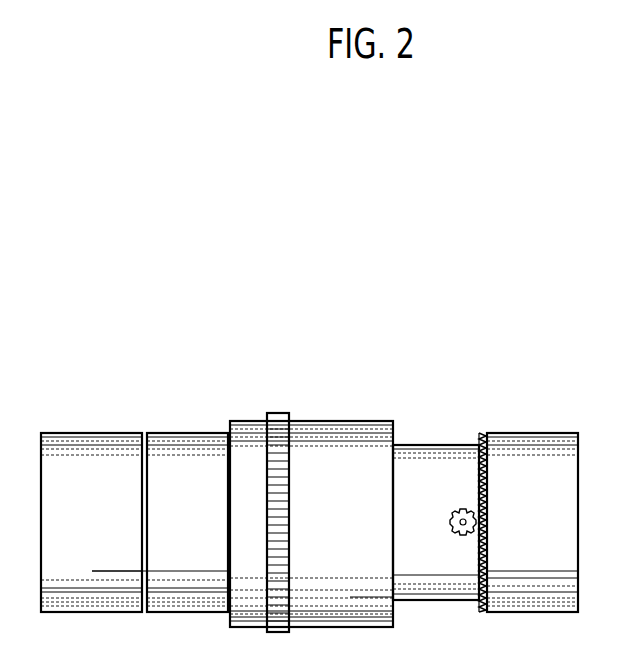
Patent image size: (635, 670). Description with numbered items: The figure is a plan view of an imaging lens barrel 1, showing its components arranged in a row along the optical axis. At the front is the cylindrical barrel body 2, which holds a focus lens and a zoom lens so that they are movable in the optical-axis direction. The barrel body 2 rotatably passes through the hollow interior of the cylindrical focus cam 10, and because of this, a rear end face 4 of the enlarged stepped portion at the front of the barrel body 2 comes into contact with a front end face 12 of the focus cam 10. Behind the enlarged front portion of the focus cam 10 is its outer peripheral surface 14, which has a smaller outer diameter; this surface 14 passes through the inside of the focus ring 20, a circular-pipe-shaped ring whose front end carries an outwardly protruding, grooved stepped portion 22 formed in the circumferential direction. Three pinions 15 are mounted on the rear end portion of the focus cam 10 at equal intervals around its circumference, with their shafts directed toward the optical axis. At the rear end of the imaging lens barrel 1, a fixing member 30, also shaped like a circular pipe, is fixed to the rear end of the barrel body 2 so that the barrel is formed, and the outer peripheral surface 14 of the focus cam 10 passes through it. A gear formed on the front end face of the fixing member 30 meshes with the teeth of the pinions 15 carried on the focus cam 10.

The imaging lens barrel 1 is at (102, 312).
The barrel body 2 is at (92, 437).
The rear end face 4 is at (143, 592).
The focus cam 10 is at (200, 437).
The front end face 12 is at (140, 437).
The outer peripheral surface 14 is at (441, 447).
The pinions 15 is at (466, 530).
The focus ring 20 is at (353, 430).
The stepped portion 22 is at (277, 413).
The fixing member 30 is at (556, 446).